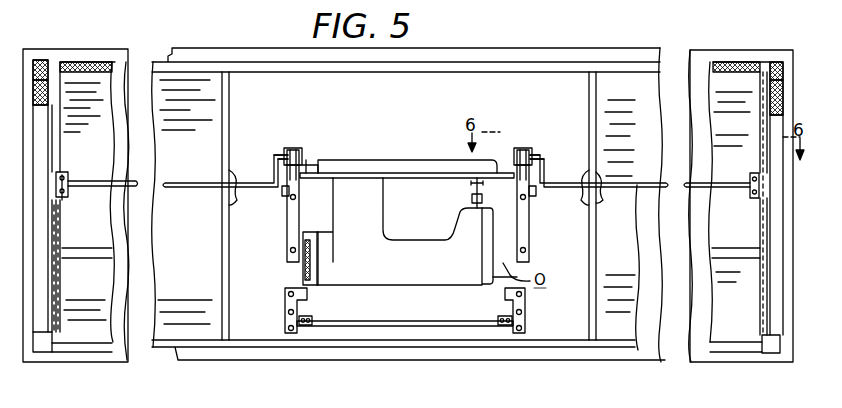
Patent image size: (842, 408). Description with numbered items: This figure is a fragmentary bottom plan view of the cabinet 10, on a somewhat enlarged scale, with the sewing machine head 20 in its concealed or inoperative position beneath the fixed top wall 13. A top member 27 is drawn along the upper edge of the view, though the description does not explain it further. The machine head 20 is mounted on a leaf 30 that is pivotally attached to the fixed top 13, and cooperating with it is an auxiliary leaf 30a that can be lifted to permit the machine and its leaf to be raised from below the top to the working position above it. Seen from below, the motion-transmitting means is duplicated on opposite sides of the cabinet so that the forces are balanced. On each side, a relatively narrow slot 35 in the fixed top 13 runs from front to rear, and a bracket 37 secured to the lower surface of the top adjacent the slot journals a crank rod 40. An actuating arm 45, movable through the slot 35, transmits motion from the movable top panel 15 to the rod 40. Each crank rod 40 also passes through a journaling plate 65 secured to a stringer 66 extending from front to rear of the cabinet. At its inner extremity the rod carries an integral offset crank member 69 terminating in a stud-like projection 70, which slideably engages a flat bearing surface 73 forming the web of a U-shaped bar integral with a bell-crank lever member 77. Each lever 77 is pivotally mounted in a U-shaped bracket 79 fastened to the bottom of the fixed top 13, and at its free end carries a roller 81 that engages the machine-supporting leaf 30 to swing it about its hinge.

The fixed top wall 13 is at (80, 327).
The movable top panel 15 is at (425, 360).
The sewing machine head 20 is at (363, 211).
The top board 27 is at (218, 62).
The leaf 30 is at (353, 172).
The auxiliary leaf 30a is at (335, 312).
The slots 35 is at (52, 82).
The brackets 37 is at (63, 172).
The crank rods 40 is at (88, 190).
The actuating arms 45 is at (55, 275).
The journaling plates 65 is at (233, 205).
The stringers 66 is at (232, 91).
The offset crank member 69 is at (272, 165).
The stud-like projection 70 is at (287, 151).
The flat bearing surface 73 is at (296, 150).
The bell-crank lever member 77 is at (284, 193).
The U-shaped bracket 79 is at (288, 233).
The roller 81 is at (311, 165).
The cabinet 10 is at (548, 110).